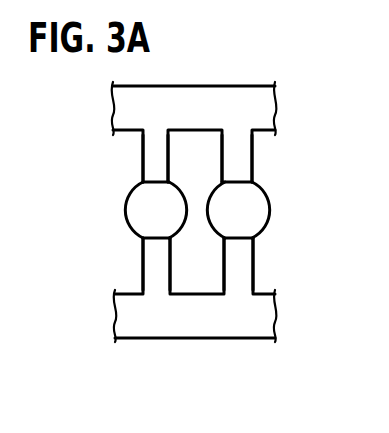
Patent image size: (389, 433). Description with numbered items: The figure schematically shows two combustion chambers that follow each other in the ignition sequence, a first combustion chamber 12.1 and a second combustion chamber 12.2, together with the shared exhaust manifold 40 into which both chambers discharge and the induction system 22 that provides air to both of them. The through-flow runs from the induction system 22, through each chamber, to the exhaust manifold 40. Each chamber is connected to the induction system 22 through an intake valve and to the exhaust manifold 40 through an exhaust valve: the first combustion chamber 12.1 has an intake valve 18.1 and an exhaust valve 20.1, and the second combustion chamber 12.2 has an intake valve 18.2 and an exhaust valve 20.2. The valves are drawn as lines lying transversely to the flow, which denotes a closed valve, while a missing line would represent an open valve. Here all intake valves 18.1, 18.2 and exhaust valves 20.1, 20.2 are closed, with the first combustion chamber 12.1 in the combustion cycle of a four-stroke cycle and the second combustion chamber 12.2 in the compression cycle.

The exhaust manifold 40 is at (250, 86).
The induction system 22 is at (257, 338).
The first combustion chamber 12.1 is at (137, 214).
The second combustion chamber 12.2 is at (262, 214).
The exhaust valve 20.1 is at (157, 182).
The exhaust valve 20.2 is at (240, 182).
The intake valve 18.1 is at (157, 240).
The intake valve 18.2 is at (240, 240).